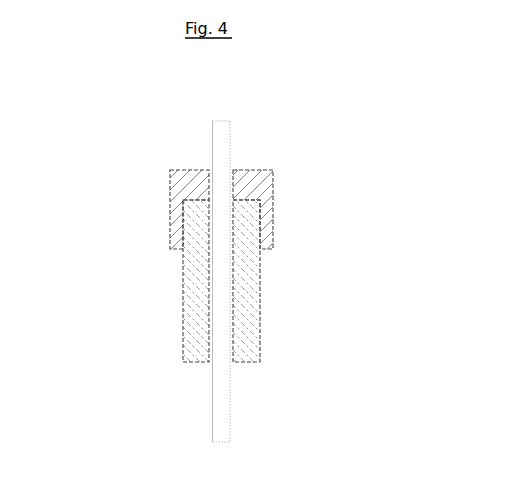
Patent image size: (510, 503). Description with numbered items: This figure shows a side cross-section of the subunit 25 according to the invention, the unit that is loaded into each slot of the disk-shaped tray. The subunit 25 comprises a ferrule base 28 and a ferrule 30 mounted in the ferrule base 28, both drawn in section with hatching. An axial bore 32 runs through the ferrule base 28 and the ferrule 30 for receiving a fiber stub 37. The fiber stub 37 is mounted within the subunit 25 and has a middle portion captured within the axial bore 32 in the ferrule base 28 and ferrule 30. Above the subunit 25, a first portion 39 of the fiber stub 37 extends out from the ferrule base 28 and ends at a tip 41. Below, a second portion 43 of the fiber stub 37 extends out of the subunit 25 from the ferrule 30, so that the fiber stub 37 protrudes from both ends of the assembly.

The subunit 25 is at (126, 222).
The ferrule base 28 is at (258, 171).
The ferrule 30 is at (260, 300).
The axial bore 32 is at (232, 175).
The fiber stub 37 is at (232, 405).
The first portion 39 is at (205, 122).
The tip 41 is at (224, 121).
The second portion 43 is at (210, 363).